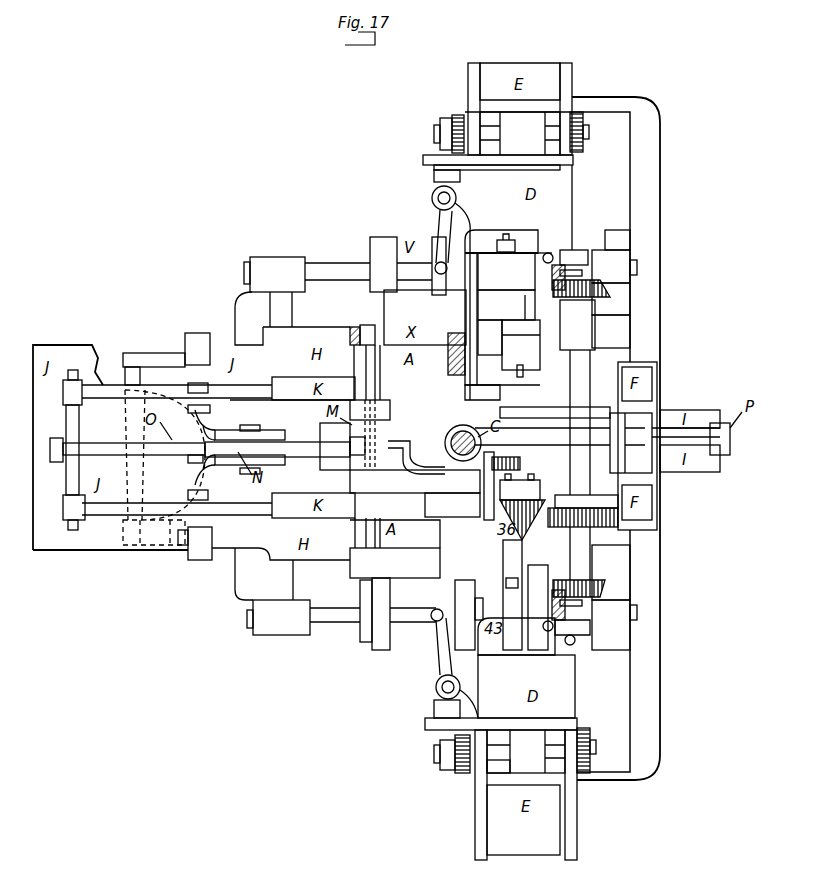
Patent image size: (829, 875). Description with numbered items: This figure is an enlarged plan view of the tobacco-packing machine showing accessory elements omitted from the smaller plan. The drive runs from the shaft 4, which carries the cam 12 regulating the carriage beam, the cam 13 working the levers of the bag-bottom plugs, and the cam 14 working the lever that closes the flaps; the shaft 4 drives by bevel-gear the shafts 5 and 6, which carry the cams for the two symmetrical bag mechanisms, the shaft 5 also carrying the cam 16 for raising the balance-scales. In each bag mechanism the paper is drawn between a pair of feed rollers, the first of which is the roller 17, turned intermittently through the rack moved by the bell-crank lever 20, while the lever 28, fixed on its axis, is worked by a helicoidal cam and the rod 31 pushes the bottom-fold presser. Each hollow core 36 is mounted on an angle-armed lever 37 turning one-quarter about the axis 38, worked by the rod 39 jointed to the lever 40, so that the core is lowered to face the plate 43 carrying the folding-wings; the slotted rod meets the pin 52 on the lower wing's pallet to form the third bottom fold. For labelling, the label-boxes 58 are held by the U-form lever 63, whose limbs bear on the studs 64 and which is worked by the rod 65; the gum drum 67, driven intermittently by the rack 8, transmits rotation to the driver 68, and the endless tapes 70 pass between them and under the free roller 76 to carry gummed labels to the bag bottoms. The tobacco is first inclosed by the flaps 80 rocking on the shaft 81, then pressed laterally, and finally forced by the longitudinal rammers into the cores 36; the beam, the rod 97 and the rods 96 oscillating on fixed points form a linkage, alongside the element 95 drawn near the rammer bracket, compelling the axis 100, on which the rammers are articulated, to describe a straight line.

The shaft 4 is at (585, 443).
The shaft 5 is at (318, 622).
The shaft 6 is at (325, 264).
The rack 8 is at (515, 457).
The cam 12 is at (565, 430).
The cam 13 is at (565, 410).
The cam 14 is at (588, 502).
The cam 16 is at (362, 592).
The roller 17 is at (498, 766).
The bell-crank lever 20 is at (470, 655).
The lever 28 is at (442, 657).
The rod 31 is at (572, 646).
The hollow core 36 is at (506, 271).
The angle-armed lever 37 is at (490, 337).
The axis 38 is at (523, 371).
The rod 39 is at (525, 342).
The lever 40 is at (540, 331).
The plate 43 is at (501, 257).
The pin 52 is at (476, 600).
The label-box 58 is at (425, 508).
The U-form lever 63 is at (410, 435).
The stud 64 is at (437, 486).
The rod 65 is at (390, 440).
The gum drum 67 is at (473, 562).
The driver 68 is at (520, 482).
The endless tape 70 is at (514, 540).
The free roller 76 is at (535, 492).
The flap 80 is at (355, 530).
The shaft 81 is at (365, 325).
The stop 95 is at (150, 368).
The rod 96 is at (155, 353).
The rod 97 is at (222, 428).
The axis 100 is at (75, 390).